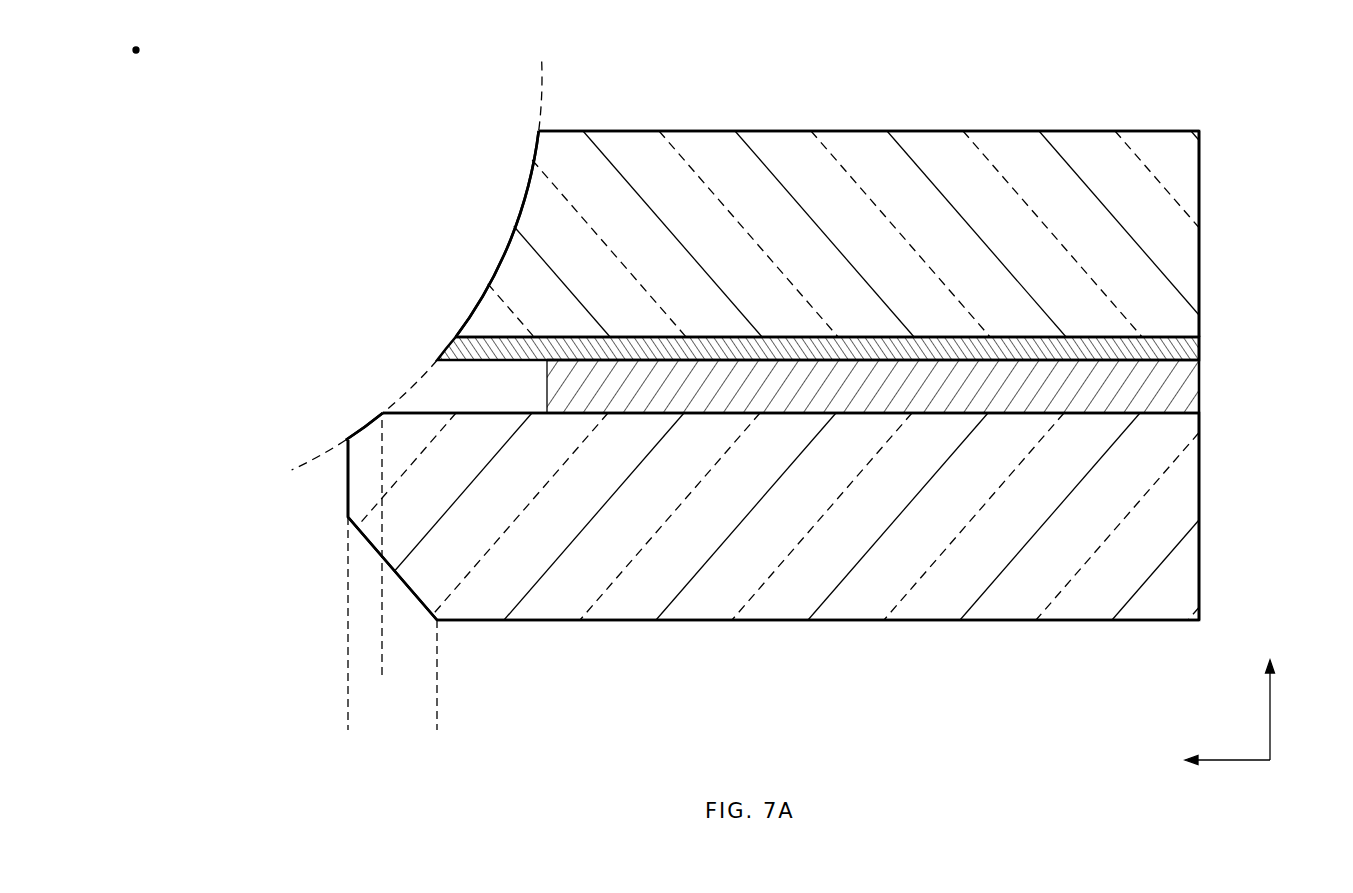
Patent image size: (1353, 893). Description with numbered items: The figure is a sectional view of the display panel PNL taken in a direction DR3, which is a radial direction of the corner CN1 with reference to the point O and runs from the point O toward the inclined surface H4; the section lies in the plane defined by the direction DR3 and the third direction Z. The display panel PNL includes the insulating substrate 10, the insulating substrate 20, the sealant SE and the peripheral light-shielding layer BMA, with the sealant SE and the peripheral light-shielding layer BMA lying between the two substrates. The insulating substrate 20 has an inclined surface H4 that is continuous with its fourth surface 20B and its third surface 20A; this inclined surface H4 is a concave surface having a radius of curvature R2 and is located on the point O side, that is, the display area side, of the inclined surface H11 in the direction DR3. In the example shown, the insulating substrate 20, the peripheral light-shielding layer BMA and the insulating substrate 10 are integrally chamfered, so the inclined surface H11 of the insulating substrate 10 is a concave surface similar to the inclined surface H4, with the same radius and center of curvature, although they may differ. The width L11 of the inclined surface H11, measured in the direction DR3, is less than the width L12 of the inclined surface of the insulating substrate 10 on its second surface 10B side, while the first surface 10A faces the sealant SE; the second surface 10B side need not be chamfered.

The insulating substrate 10 is at (1190, 554).
The first surface 10A is at (648, 400).
The second surface 10B is at (570, 632).
The insulating substrate 20 is at (1190, 245).
The third surface 20A is at (665, 345).
The fourth surface 20B is at (708, 128).
The peripheral light-shielding layer BMA is at (1190, 349).
The sealant SE is at (1190, 391).
The display panel PNL is at (1235, 157).
The point O is at (1196, 121).
The inclined surface H4 is at (522, 179).
The inclined surface H11 is at (352, 422).
The radius of curvature R2 is at (412, 362).
The width L11 is at (410, 657).
The width L12 is at (437, 712).
The corner CN1 is at (296, 672).
The third direction Z is at (1269, 697).
The direction DR3 is at (1204, 763).